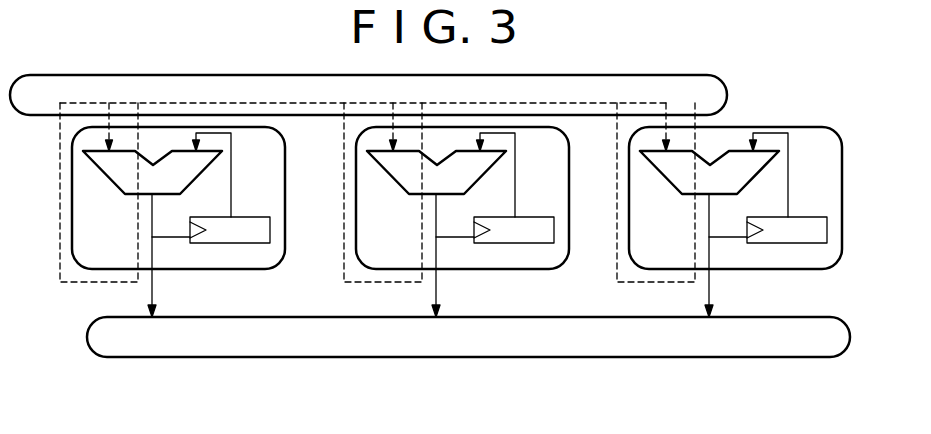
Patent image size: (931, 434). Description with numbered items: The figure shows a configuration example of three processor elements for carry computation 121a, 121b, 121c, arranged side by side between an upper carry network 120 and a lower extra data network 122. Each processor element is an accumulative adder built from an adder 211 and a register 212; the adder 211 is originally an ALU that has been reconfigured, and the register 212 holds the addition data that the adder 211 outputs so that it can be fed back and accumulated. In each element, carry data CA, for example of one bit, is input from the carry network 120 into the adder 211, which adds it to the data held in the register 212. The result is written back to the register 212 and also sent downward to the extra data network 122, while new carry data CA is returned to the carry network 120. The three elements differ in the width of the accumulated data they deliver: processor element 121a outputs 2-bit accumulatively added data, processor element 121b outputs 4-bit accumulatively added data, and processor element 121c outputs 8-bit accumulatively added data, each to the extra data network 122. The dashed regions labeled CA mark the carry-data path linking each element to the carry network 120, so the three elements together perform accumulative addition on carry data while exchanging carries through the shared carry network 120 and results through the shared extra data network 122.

The carry network 120 is at (728, 95).
The extra data network 122 is at (332, 357).
The processor element for carry computation 121a is at (238, 270).
The processor element for carry computation 121b is at (540, 270).
The processor element for carry computation 121c is at (813, 270).
The adder 211 is at (110, 177).
The register 212 is at (248, 215).
The carry data CA is at (83, 282).
The 2-bit addition data 2 is at (169, 255).
The 4-bit addition data 4 is at (453, 255).
The 8-bit addition data 8 is at (726, 255).